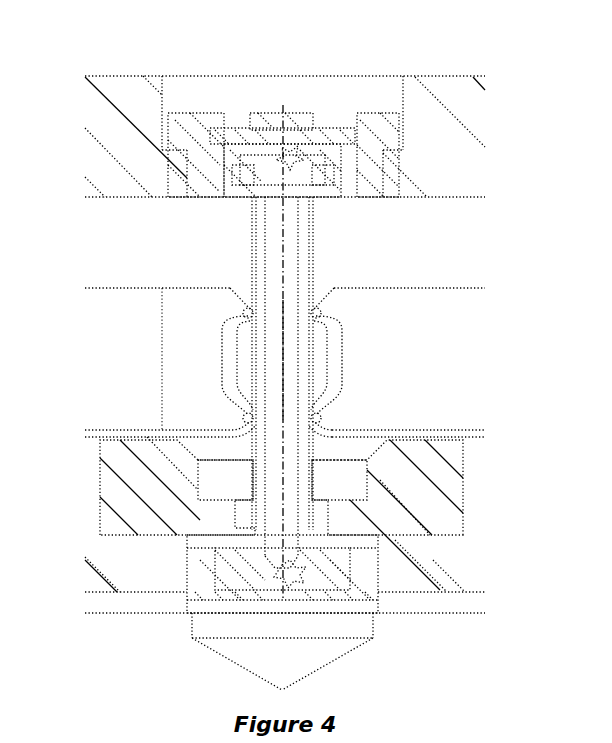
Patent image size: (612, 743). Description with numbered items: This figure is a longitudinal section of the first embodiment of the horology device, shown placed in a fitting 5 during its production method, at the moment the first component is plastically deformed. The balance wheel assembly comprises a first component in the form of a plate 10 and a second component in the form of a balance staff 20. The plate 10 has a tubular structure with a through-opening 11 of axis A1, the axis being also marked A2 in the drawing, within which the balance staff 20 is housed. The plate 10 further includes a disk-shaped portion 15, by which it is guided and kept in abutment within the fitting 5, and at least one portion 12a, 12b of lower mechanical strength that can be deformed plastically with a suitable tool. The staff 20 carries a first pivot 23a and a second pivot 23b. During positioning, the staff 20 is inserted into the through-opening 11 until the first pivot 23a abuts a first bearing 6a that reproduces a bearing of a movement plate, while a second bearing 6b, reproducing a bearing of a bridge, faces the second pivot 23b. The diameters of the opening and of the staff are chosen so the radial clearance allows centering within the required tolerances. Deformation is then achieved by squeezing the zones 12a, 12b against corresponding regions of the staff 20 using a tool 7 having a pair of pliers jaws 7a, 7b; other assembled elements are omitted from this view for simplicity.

The second bearing 6b is at (283, 97).
The second pivot 23b is at (299, 149).
The axis A1 is at (281, 215).
The longitudinal axis of sleeve A2 is at (216, 312).
The balance staff 20 is at (293, 225).
The through-opening 11 is at (317, 252).
The pliers jaw 7a is at (239, 313).
The pliers jaw 7b is at (239, 418).
The portion of lower mechanical strength 12a is at (325, 313).
The portion of lower mechanical strength 12b is at (325, 418).
The tool 7 is at (196, 351).
The plate 10 is at (317, 363).
The portion 15 is at (368, 450).
The fitting 5 is at (166, 475).
The first bearing 6a is at (170, 625).
The first pivot 23a is at (303, 578).